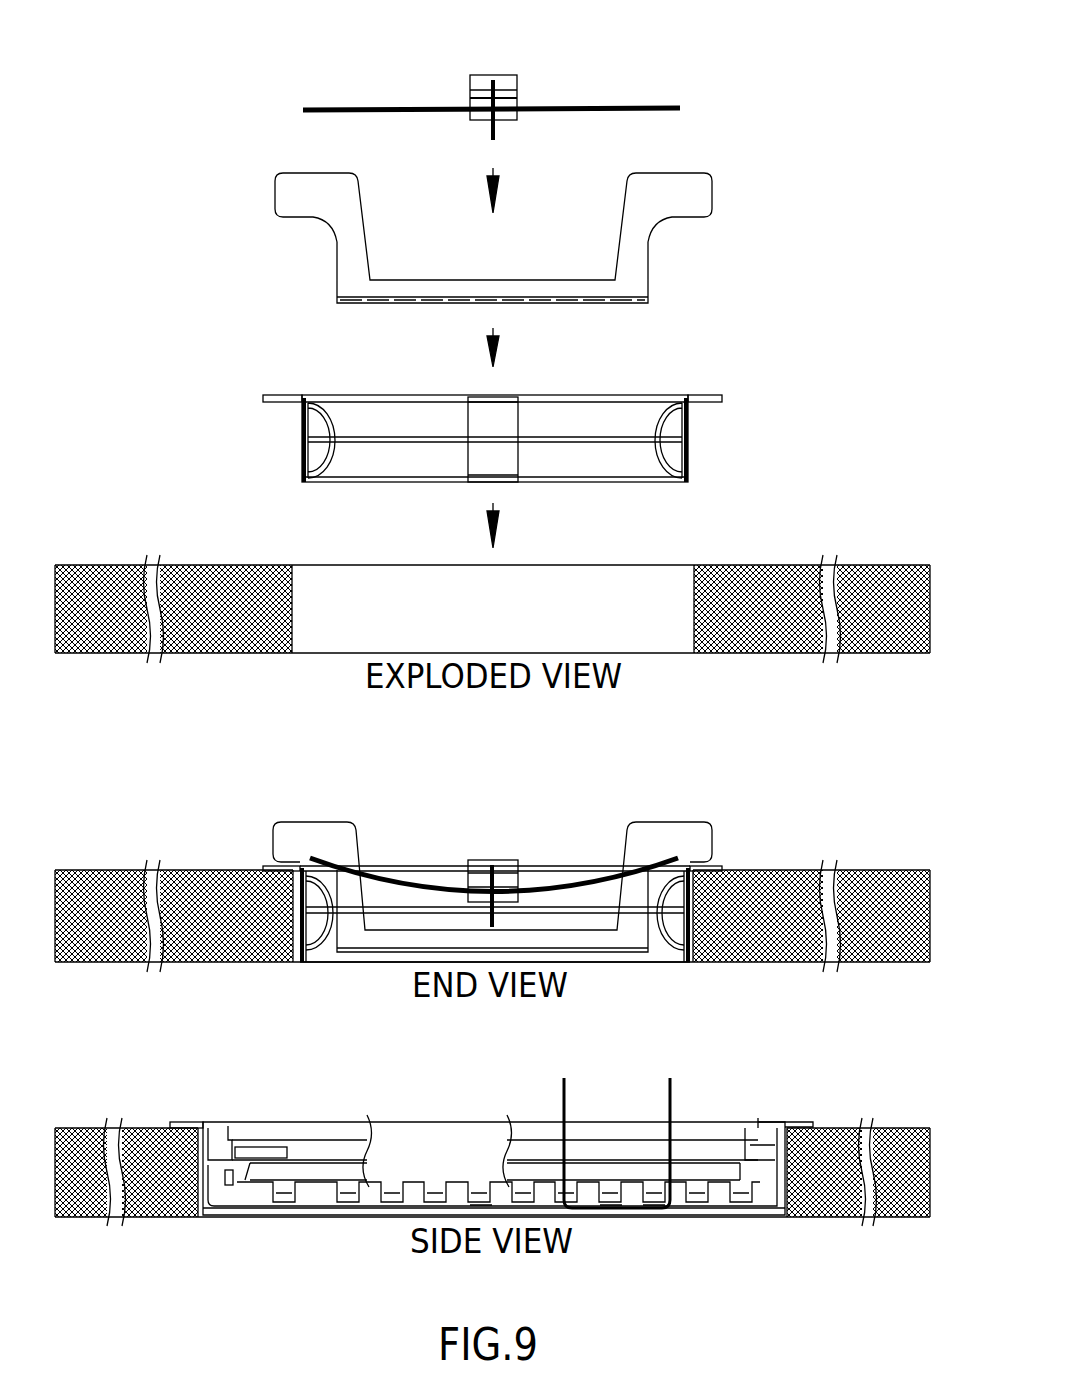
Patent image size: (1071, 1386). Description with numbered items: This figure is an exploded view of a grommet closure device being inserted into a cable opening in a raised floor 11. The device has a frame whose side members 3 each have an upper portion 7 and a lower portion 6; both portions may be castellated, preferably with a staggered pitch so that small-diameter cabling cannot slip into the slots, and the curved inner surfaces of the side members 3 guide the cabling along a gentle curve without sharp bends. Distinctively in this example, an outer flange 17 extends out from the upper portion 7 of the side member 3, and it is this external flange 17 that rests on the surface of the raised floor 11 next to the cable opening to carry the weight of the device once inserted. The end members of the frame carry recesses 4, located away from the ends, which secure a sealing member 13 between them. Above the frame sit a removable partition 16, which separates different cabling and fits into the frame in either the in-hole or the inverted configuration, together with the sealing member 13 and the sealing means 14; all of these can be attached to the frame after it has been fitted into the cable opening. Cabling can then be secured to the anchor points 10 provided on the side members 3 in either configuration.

The side member 3 is at (688, 448).
The recess 4 is at (497, 410).
The lower portion 6 is at (325, 473).
The upper portion 7 is at (330, 408).
The anchor point 10 is at (678, 1190).
The raised floor 11 is at (257, 565).
The sealing member 13 is at (508, 80).
The sealing means 14 is at (622, 108).
The partition 16 is at (697, 178).
The outer flange 17 is at (722, 398).